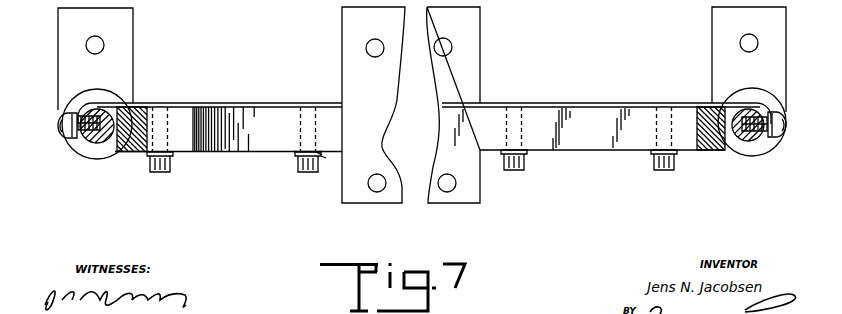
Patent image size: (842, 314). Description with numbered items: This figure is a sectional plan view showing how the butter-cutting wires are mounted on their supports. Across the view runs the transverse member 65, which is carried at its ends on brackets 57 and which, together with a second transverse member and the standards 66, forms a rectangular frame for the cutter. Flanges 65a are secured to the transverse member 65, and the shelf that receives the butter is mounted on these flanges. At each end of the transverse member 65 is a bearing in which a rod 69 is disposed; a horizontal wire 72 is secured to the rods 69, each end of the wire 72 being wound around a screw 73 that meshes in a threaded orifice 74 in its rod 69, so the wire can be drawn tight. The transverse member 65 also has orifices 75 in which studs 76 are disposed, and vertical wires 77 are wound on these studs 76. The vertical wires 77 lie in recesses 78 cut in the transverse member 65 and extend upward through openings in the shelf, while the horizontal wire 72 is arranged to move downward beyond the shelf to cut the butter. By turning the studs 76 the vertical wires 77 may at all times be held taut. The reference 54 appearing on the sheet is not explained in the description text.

The frame 54 is at (687, 10).
The bracket 57 is at (422, 59).
The transverse member 65 is at (255, 140).
The flange 65a is at (411, 105).
The standard 66 is at (139, 110).
The rod 69 is at (111, 151).
The wire 72 is at (203, 104).
The screw 73 is at (60, 138).
The threaded orifice 74 is at (85, 143).
The orifice 75 is at (297, 156).
The stud 76 is at (309, 173).
The vertical wire 77 is at (323, 157).
The recess 78 is at (318, 152).